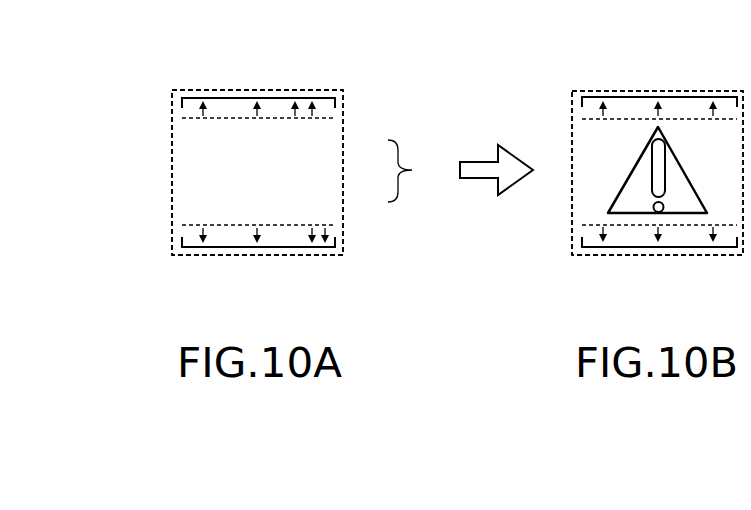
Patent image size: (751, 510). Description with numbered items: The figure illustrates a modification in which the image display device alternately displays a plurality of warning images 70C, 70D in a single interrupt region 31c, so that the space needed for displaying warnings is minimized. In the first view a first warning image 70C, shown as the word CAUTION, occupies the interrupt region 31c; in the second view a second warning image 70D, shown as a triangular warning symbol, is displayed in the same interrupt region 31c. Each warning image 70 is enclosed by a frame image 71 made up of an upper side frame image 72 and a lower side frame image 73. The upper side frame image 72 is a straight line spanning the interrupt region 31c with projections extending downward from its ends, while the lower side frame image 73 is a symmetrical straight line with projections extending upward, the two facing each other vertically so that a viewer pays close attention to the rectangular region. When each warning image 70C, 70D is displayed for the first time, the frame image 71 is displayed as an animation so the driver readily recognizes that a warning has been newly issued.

In FIG. 10A, the warning image 70 is at (257, 172).
In FIG. 10B, the warning image 70 is at (657, 173).
In FIG. 10A, the first warning image 70C is at (175, 168).
In FIG. 10B, the second warning image 70D is at (607, 182).
In FIG. 10A, the interrupt region 31c is at (282, 90).
In FIG. 10B, the interrupt region 31c is at (682, 90).
In FIG. 10A, the frame image 71 is at (415, 171).
In FIG. 10A, the upper side frame image 72 is at (296, 110).
In FIG. 10B, the upper side frame image 72 is at (618, 88).
In FIG. 10A, the lower side frame image 73 is at (324, 228).
In FIG. 10B, the lower side frame image 73 is at (597, 256).